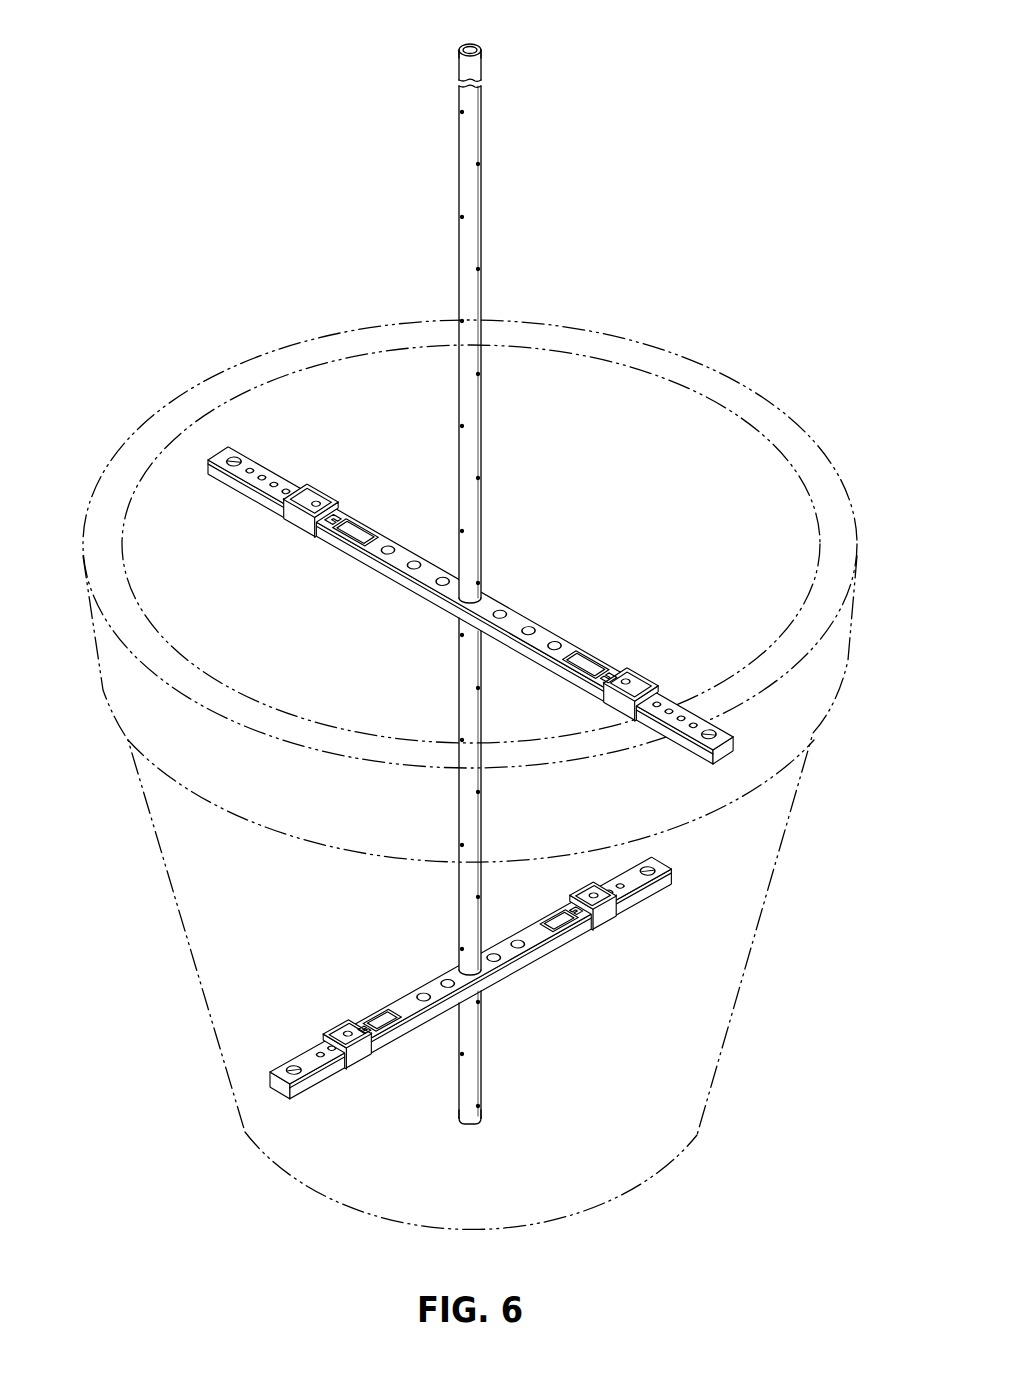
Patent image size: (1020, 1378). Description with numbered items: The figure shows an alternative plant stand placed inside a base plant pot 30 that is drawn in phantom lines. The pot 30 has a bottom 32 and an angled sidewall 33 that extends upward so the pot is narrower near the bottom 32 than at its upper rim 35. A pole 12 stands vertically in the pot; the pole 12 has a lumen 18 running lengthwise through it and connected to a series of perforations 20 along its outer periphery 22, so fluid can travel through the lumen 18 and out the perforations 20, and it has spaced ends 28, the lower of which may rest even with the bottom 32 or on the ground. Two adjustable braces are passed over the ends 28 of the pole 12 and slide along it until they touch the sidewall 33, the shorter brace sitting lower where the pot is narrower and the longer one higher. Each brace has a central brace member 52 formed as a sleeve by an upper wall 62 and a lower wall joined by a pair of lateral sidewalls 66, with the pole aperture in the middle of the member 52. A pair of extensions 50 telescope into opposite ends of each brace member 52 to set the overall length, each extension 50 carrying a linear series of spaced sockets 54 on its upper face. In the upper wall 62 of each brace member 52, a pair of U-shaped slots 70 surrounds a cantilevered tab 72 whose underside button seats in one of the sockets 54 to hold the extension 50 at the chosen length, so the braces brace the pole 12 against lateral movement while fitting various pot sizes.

The pole 12 is at (471, 584).
The lumen 18 is at (464, 46).
The perforations 20 is at (482, 160).
The outer periphery 22 is at (482, 238).
The ends 28 is at (477, 47).
The base plant pot 30 is at (733, 372).
The bottom 32 is at (600, 1206).
The sidewall 33 is at (196, 955).
The upper rim 35 is at (262, 355).
The extensions 50 is at (252, 456).
The brace member 52 is at (493, 590).
The sockets 54 is at (273, 483).
The upper wall 62 is at (405, 553).
The lateral sidewalls 66 is at (346, 565).
The U-shaped slots 70 is at (318, 526).
The tab 72 is at (335, 510).